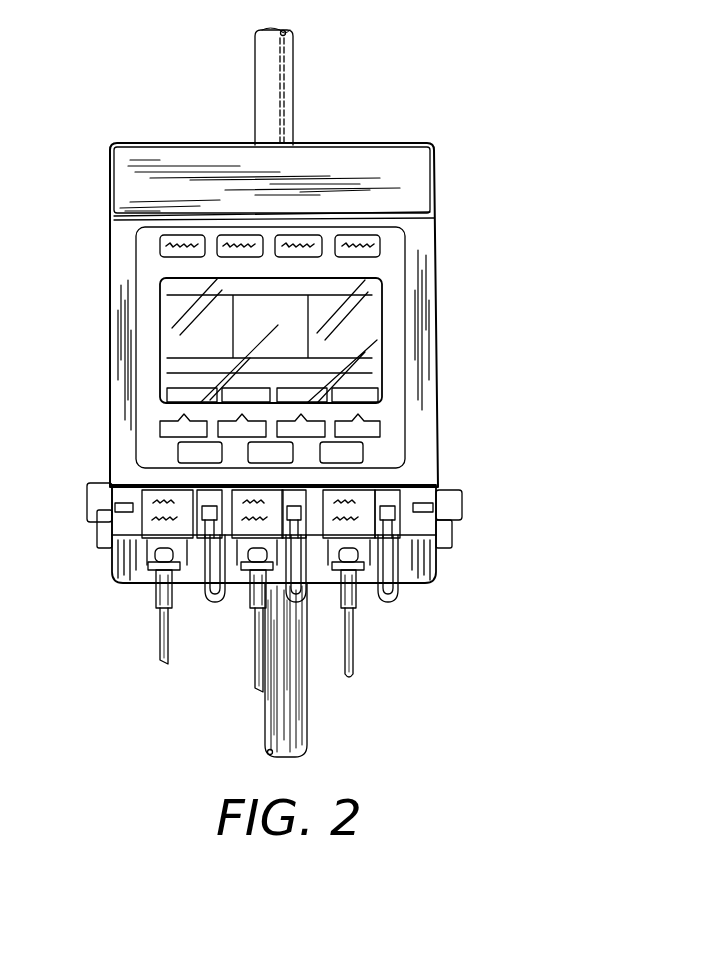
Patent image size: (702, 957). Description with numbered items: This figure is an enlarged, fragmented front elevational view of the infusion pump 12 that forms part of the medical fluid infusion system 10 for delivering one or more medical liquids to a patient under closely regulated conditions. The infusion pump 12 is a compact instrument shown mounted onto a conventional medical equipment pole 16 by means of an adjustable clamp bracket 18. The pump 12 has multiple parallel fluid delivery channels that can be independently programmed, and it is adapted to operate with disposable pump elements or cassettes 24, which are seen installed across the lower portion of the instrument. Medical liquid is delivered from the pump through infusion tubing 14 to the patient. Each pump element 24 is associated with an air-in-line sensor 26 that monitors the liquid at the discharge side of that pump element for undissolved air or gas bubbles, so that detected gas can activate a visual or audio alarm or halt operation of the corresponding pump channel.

The medical fluid infusion system 10 is at (362, 118).
The infusion pump 12 is at (121, 271).
The infusion tubing 14 is at (157, 657).
The medical equipment pole 16 is at (268, 58).
The clamp bracket 18 is at (453, 489).
The cassette 24 is at (246, 495).
The air-in-line sensor 26 is at (138, 590).